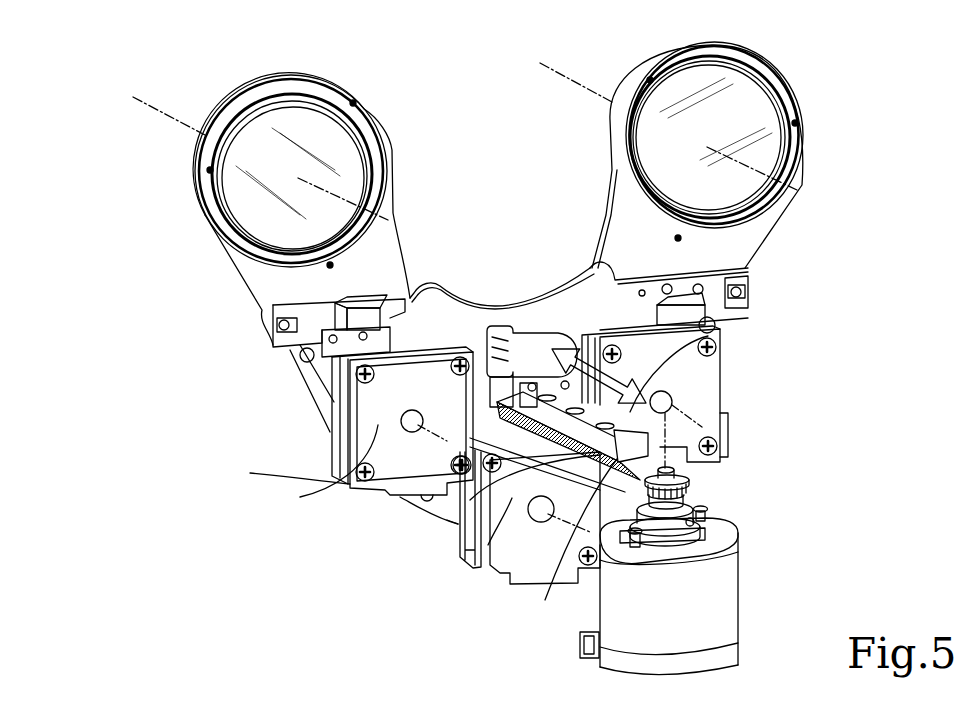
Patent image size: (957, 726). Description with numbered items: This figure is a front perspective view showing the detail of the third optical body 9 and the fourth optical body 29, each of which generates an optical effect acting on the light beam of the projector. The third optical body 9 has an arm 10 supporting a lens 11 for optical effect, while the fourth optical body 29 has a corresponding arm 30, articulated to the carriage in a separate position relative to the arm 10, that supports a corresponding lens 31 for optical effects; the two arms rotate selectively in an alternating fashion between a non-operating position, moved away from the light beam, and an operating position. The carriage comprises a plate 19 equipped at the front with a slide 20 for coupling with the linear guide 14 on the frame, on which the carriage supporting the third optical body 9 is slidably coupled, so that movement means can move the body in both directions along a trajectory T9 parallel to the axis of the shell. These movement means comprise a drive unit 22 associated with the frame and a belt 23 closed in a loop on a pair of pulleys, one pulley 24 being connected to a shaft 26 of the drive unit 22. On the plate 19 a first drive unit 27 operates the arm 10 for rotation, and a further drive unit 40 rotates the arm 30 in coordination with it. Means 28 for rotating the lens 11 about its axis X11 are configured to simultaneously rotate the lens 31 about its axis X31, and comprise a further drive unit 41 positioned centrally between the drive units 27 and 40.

The third optical body 9 is at (232, 282).
The arm 10 is at (383, 248).
The lens 11 is at (243, 195).
The axis of the lens X11 is at (165, 112).
The fourth optical body 29 is at (813, 87).
The arm 30 is at (738, 243).
The lens 31 is at (753, 122).
The axis of the lens X31 is at (577, 80).
The plate 19 is at (460, 307).
The slide 20 is at (507, 322).
The trajectory T9 is at (640, 393).
The first drive unit 27 is at (350, 497).
The means for rotating the lens 28 is at (493, 583).
The further drive unit 41 is at (487, 558).
The linear guide 14 is at (470, 500).
The further drive unit 40 is at (710, 387).
The pulley 24 is at (716, 445).
The belt 23 is at (620, 482).
The shaft 26 is at (670, 470).
The drive unit 22 is at (732, 605).